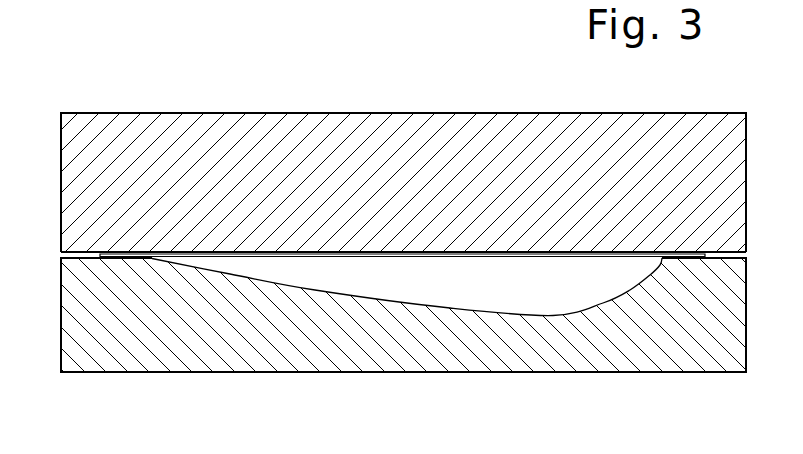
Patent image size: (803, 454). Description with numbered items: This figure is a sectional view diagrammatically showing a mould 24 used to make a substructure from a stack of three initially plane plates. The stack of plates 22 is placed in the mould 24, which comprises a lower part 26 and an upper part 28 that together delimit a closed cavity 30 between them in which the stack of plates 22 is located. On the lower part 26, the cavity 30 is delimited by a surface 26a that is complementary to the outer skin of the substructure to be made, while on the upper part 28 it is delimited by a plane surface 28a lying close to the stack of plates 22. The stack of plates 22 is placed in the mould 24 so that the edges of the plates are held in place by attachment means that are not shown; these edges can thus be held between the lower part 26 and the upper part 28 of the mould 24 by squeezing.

The stack of plates 22 is at (350, 252).
The mould 24 is at (401, 222).
The lower part 26 is at (401, 343).
The surface 26a is at (262, 280).
The upper part 28 is at (435, 160).
The plane surface 28a is at (433, 254).
The cavity 30 is at (407, 338).